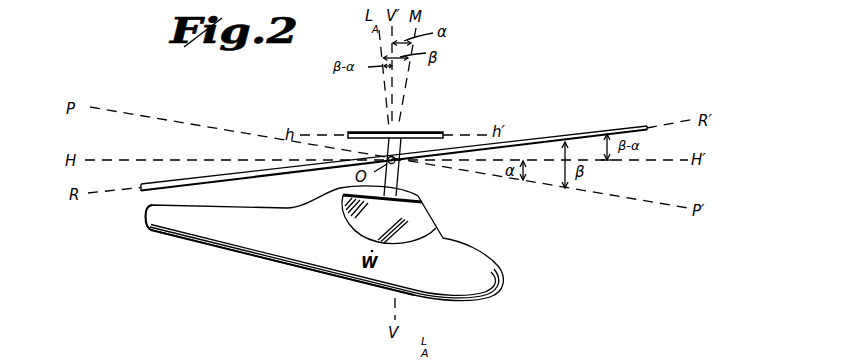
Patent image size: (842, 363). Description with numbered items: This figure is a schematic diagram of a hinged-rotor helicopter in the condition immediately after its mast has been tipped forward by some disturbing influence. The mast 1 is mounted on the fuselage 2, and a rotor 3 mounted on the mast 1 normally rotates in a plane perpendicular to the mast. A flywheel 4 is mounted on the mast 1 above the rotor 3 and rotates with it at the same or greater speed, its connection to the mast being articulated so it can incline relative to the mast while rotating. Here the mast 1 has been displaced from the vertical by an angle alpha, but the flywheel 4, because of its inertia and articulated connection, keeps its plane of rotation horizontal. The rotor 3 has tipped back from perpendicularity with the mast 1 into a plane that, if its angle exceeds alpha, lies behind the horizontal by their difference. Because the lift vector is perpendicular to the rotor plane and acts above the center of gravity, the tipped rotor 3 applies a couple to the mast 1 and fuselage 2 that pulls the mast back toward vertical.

The mast 1 is at (398, 176).
The fuselage 2 is at (446, 238).
The rotor 3 is at (565, 133).
The flywheel 4 is at (372, 133).